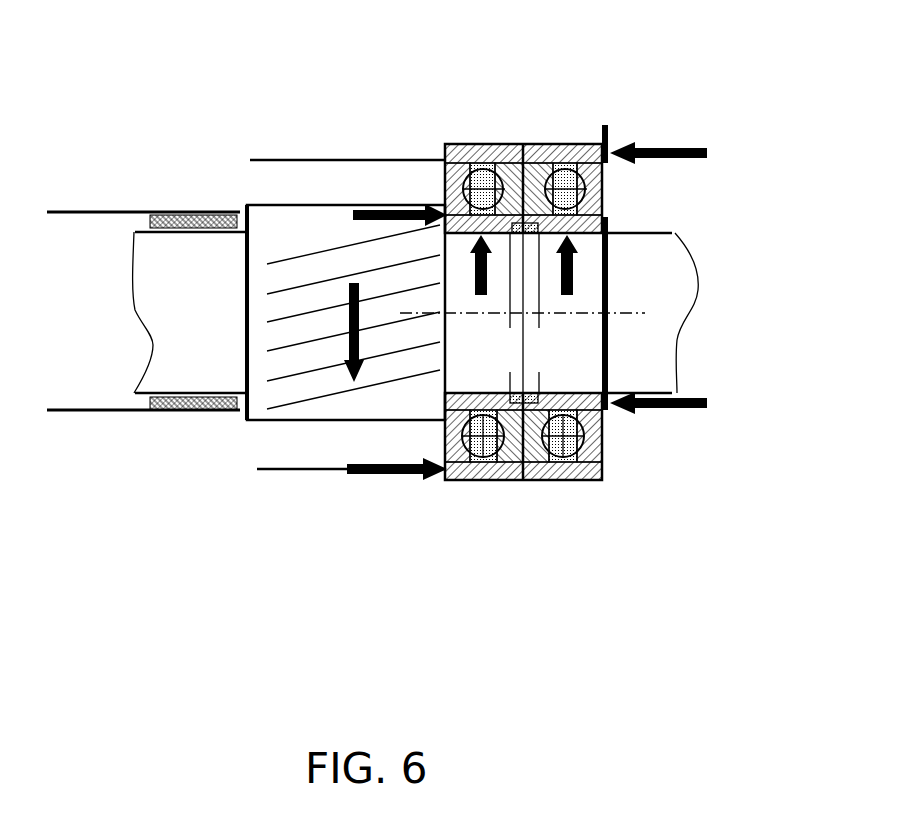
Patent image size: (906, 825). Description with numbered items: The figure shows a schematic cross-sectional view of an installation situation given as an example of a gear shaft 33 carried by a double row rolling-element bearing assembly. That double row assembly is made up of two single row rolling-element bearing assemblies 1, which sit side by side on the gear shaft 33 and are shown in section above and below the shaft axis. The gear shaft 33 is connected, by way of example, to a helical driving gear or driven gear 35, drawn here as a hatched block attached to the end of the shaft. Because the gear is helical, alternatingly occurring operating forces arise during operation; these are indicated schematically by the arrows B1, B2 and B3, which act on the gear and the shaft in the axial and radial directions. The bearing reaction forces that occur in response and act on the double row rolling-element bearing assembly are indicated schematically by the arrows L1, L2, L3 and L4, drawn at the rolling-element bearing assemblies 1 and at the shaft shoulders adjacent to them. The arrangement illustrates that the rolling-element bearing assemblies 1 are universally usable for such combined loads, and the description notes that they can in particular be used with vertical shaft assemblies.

The single row rolling-element bearing assembly 1 is at (495, 128).
The helical driving gear or driven gear 35 is at (293, 235).
The gear shaft 33 is at (672, 293).
The operating force arrow B1 is at (395, 222).
The operating force arrow B2 is at (347, 353).
The operating force arrow B3 is at (643, 410).
The bearing reaction force arrow L1 is at (481, 295).
The bearing reaction force arrow L2 is at (567, 295).
The bearing reaction force arrow L3 is at (381, 480).
The bearing reaction force arrow L4 is at (686, 143).